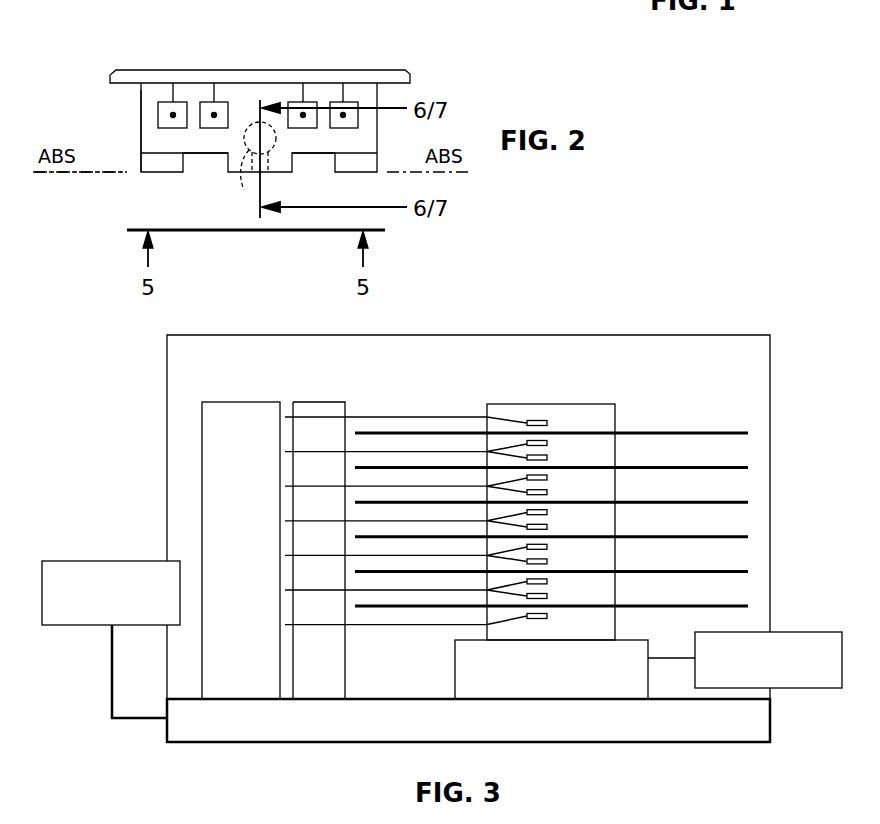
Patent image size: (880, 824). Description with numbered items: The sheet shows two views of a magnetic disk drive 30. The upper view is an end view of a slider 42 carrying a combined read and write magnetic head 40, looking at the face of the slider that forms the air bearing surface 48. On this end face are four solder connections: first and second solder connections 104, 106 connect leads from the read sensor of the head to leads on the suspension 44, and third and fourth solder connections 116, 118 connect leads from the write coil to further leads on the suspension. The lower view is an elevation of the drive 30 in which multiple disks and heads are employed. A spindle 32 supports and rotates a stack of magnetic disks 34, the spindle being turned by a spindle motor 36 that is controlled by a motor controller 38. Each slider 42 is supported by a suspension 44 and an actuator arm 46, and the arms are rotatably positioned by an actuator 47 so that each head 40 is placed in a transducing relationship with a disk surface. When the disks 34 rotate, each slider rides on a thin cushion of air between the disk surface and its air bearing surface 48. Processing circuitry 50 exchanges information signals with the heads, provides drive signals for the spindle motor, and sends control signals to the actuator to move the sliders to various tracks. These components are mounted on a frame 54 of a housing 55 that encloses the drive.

In FIG. 3, the magnetic disk drive 30 is at (663, 409).
In FIG. 3, the spindle 32 is at (604, 404).
In FIG. 3, the magnetic disk 34 is at (745, 435).
In FIG. 3, the spindle motor 36 is at (566, 681).
In FIG. 3, the motor controller 38 is at (803, 688).
In FIG. 2, the magnetic head 40 is at (244, 190).
In FIG. 2, the slider 42 is at (140, 113).
In FIG. 3, the slider 42 is at (547, 445).
In FIG. 3, the suspension 44 is at (508, 451).
In FIG. 3, the actuator arm 46 is at (445, 451).
In FIG. 3, the actuator 47 is at (230, 402).
In FIG. 2, the air bearing surface 48 is at (62, 173).
In FIG. 3, the processing circuitry 50 is at (83, 561).
In FIG. 3, the frame 54 is at (217, 736).
In FIG. 3, the housing 55 is at (683, 335).
In FIG. 2, the first solder connection 104 is at (157, 105).
In FIG. 2, the second solder connection 106 is at (329, 100).
In FIG. 2, the third solder connection 116 is at (199, 105).
In FIG. 2, the fourth solder connection 118 is at (288, 100).